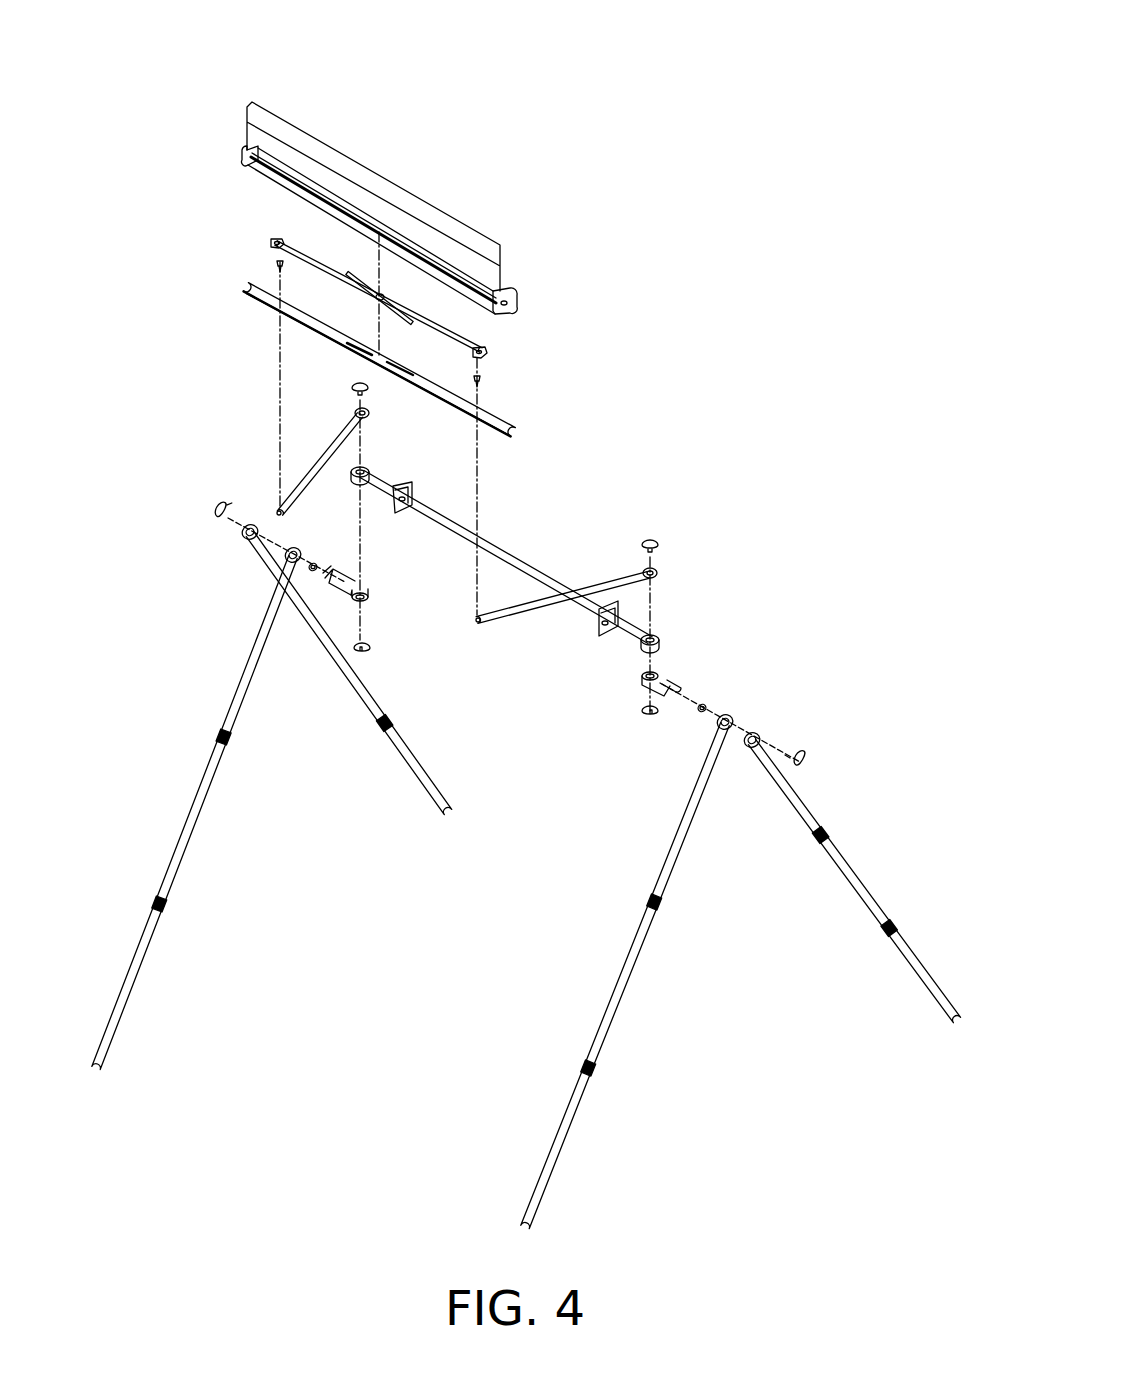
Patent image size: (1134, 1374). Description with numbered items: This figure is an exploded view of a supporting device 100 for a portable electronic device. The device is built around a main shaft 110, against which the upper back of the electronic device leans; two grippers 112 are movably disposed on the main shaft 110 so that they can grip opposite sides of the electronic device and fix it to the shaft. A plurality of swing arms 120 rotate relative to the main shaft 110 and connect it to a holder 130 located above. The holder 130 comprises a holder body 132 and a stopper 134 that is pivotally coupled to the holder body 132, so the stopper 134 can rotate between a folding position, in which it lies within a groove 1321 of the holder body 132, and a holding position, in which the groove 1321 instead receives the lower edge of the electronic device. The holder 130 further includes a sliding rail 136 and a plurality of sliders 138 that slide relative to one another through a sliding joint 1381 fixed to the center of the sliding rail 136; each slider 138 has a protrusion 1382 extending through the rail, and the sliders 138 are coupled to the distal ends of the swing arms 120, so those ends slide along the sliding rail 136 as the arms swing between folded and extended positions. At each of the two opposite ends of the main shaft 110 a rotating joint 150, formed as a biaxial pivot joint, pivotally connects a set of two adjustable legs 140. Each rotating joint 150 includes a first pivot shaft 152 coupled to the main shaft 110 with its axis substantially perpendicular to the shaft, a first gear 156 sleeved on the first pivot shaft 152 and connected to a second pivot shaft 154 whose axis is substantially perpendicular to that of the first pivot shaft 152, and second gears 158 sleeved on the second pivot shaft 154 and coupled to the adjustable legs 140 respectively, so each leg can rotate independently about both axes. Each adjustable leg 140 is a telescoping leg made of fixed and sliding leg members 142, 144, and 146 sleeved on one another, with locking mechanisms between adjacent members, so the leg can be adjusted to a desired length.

The supporting device 100 is at (820, 64).
The main shaft 110 is at (513, 565).
The gripper 112 is at (414, 481).
The swing arm 120 is at (323, 457).
The holder 130 is at (566, 250).
The holder body 132 is at (252, 147).
The groove 1321 is at (272, 165).
The stopper 134 is at (278, 128).
The sliding rail 136 is at (252, 289).
The slider 138 is at (483, 354).
The sliding joint 1381 is at (379, 296).
The protrusion 1382 is at (277, 268).
The adjustable leg 140 is at (200, 793).
The telescoping leg member 142 is at (668, 869).
The telescoping leg member 144 is at (627, 978).
The telescoping leg member 146 is at (564, 1138).
The rotating joint 150 is at (780, 656).
The first pivot shaft 152 is at (367, 468).
The second pivot shaft 154 is at (671, 680).
The first gear 156 is at (367, 591).
The second gear 158 is at (252, 521).